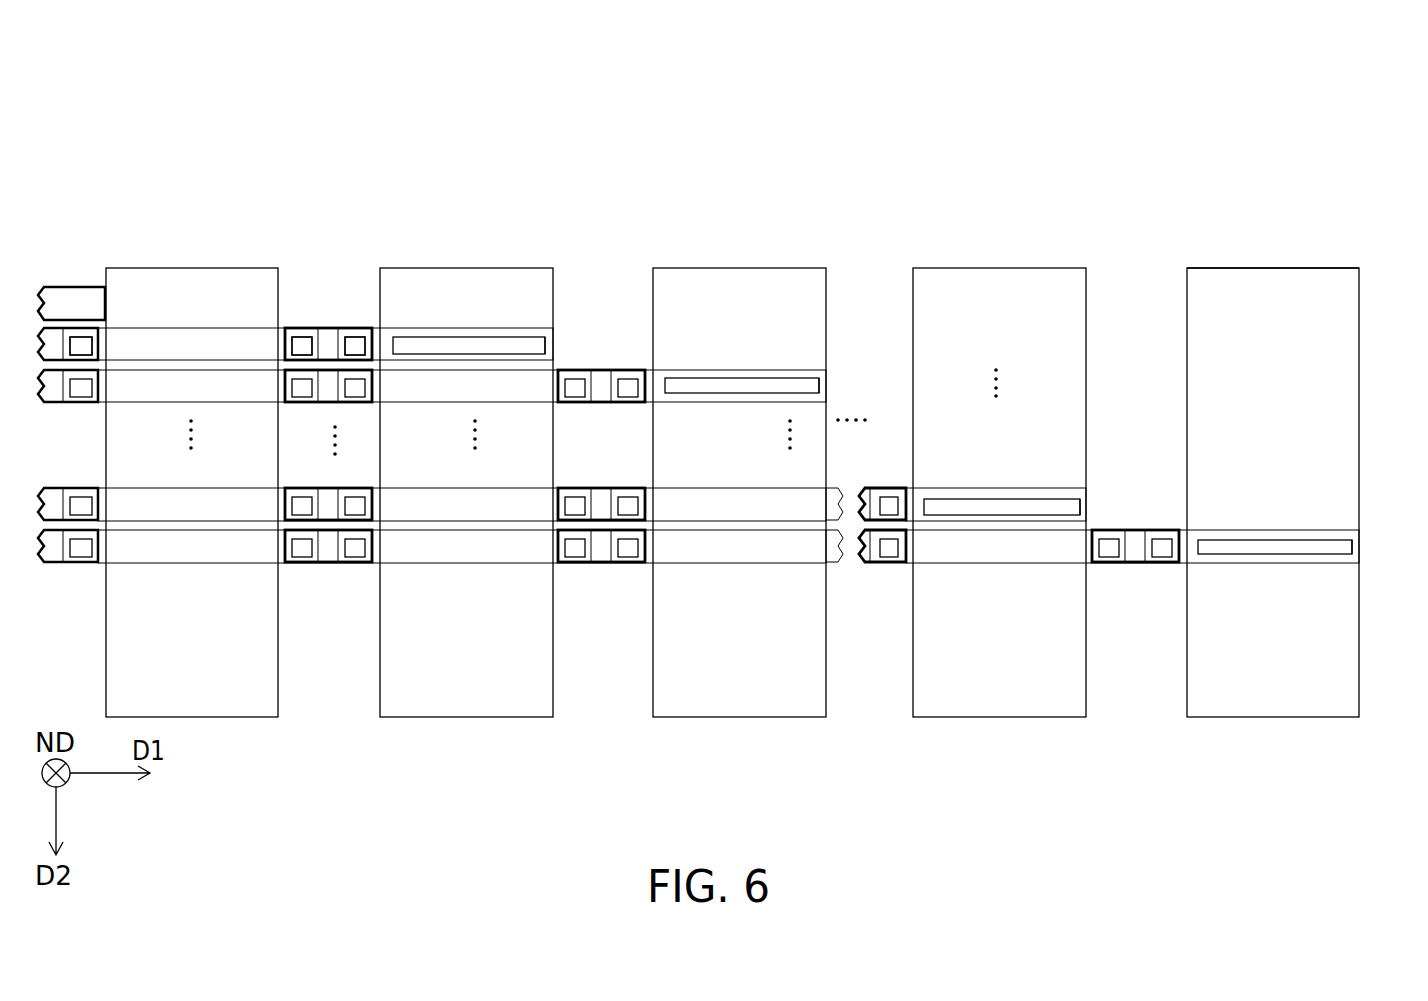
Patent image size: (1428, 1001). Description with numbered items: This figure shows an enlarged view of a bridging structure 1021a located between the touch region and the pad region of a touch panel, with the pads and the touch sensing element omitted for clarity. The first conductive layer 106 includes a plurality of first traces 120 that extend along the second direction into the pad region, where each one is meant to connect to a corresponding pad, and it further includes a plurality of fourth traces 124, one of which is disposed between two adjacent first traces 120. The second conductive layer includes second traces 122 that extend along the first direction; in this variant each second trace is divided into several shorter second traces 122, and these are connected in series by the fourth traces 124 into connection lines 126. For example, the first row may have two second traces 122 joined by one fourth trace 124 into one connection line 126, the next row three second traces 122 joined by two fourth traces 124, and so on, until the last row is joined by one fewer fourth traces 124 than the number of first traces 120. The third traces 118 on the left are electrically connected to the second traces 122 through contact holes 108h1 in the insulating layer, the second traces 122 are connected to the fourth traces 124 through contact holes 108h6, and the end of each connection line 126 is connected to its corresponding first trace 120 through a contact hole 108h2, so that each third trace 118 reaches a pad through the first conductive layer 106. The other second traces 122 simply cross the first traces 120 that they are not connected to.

The bridging structure 1021a is at (1230, 150).
The first conductive layer 106 is at (1318, 259).
The contact hole 108h1 is at (86, 326).
The contact hole 108h6 is at (303, 326).
The contact hole 108h2 is at (530, 328).
The third trace 118 is at (52, 302).
The first trace 120 is at (230, 309).
The second trace 122 is at (1270, 612).
The fourth trace 124 is at (328, 345).
The connection line 126 is at (565, 345).